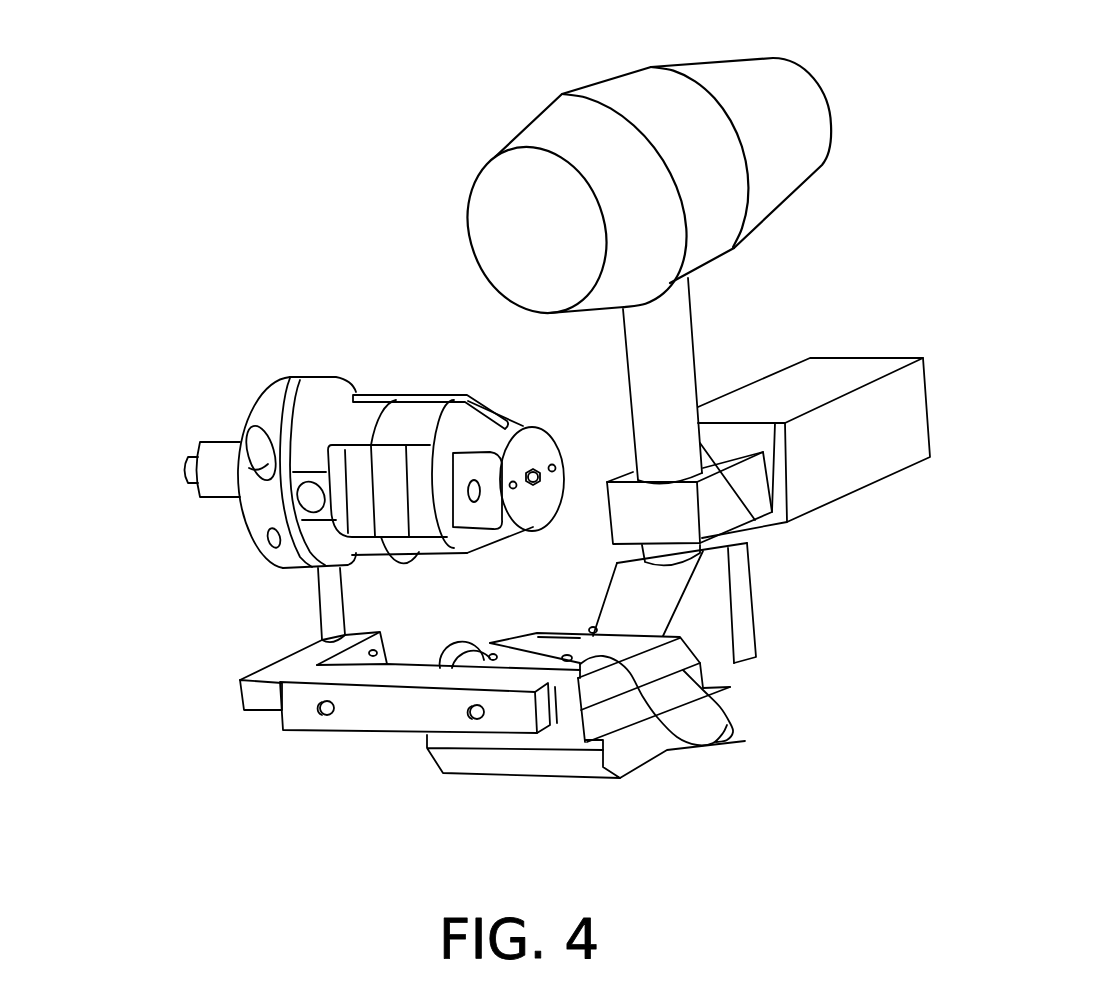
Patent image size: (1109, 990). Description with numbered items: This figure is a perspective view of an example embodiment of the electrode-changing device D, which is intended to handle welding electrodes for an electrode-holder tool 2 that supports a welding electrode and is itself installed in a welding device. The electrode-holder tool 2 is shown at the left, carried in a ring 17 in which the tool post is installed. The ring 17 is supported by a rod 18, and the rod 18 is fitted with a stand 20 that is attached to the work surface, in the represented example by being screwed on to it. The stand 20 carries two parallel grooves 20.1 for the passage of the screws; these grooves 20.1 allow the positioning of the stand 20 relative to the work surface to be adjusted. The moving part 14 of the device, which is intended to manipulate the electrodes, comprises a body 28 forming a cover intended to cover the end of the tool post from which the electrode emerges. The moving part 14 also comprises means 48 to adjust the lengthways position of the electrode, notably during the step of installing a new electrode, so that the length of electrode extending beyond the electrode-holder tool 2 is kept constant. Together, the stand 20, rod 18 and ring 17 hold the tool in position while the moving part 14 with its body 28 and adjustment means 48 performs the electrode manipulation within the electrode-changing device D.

The electrode-changing device D is at (152, 430).
The electrode-holder tool 2 is at (223, 452).
The ring 17 is at (287, 392).
The moving part 14 is at (427, 390).
The body 28 is at (424, 413).
The means to adjust the lengthways position of the electrode 48 is at (533, 486).
The rod 18 is at (325, 608).
The stand 20 is at (282, 668).
The parallel grooves 20.1 is at (725, 740).